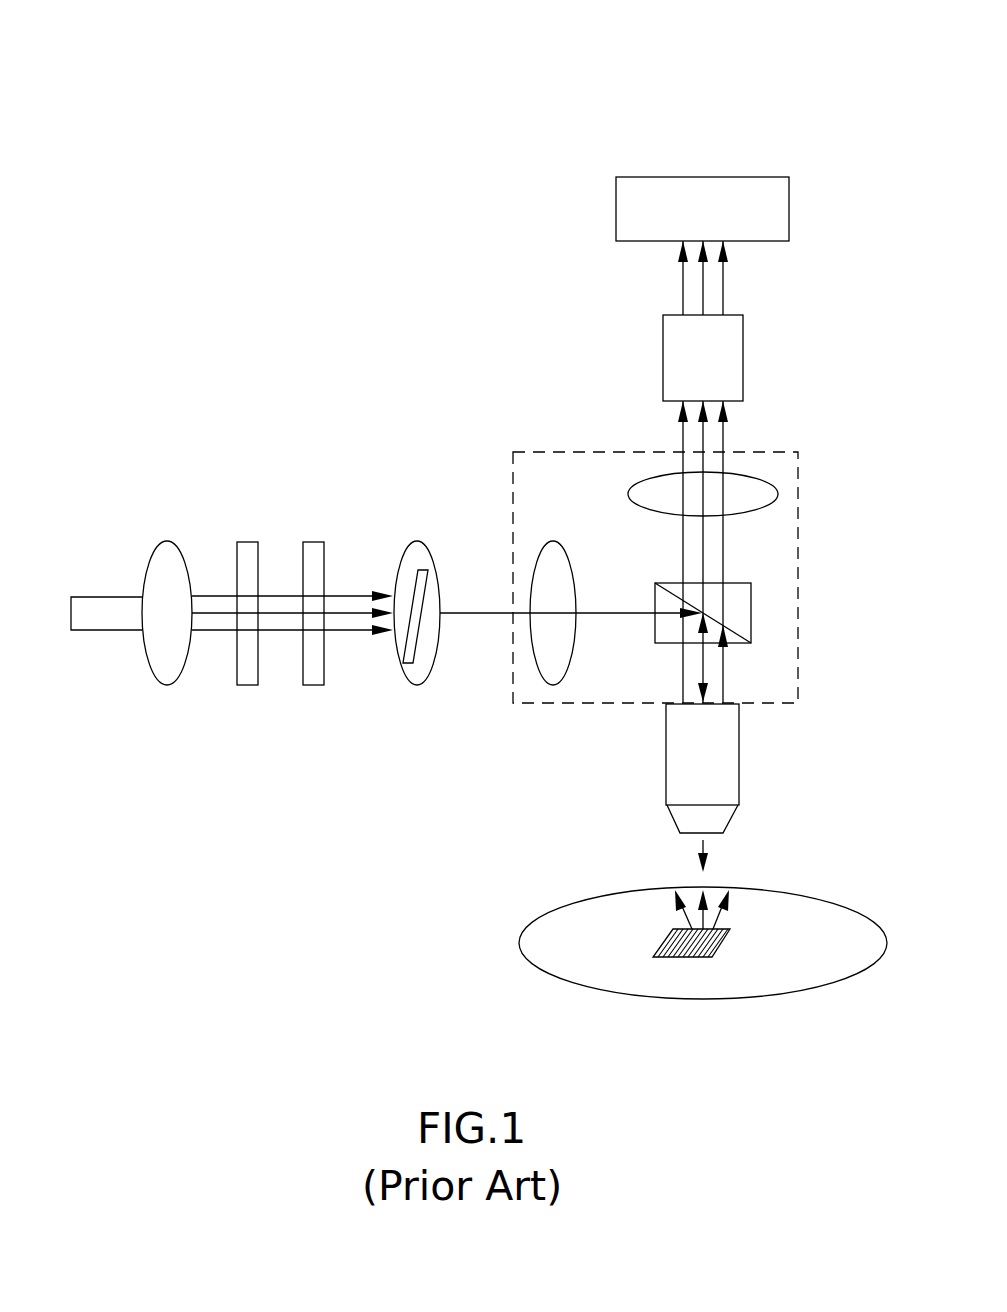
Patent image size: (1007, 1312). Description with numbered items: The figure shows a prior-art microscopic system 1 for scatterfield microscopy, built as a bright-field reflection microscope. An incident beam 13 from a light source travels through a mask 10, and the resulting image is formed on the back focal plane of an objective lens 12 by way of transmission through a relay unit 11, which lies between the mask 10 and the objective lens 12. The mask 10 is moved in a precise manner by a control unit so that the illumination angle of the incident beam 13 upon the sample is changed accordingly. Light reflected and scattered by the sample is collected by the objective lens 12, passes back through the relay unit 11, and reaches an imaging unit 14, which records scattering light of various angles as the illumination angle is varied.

The microscopic system 1 is at (321, 136).
The mask 10 is at (420, 672).
The relay unit 11 is at (551, 497).
The objective lens 12 is at (673, 750).
The incident beam 13 is at (223, 630).
The imaging unit 14 is at (635, 205).